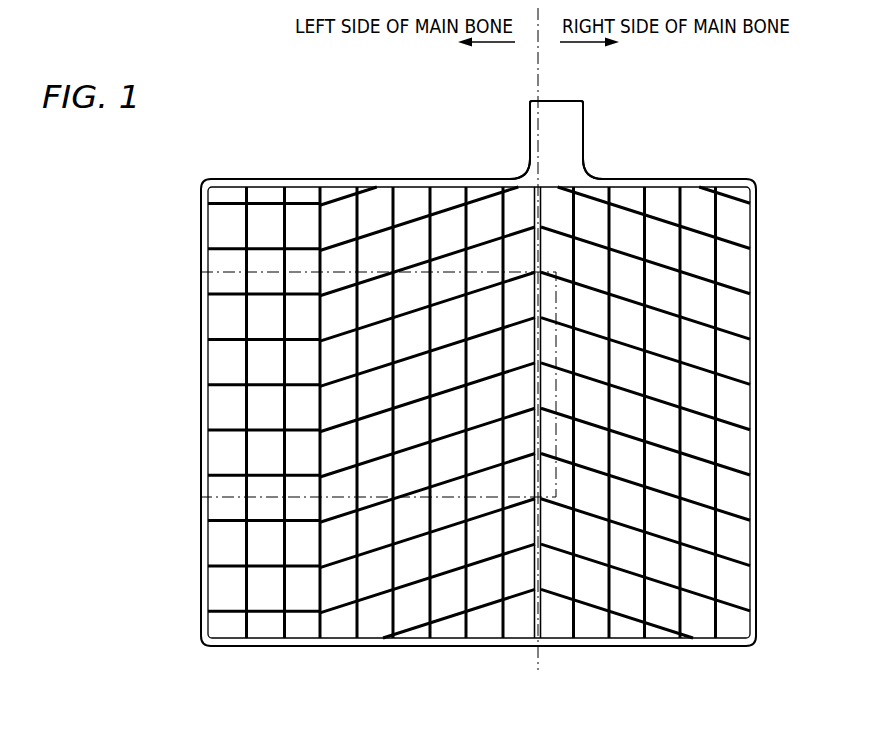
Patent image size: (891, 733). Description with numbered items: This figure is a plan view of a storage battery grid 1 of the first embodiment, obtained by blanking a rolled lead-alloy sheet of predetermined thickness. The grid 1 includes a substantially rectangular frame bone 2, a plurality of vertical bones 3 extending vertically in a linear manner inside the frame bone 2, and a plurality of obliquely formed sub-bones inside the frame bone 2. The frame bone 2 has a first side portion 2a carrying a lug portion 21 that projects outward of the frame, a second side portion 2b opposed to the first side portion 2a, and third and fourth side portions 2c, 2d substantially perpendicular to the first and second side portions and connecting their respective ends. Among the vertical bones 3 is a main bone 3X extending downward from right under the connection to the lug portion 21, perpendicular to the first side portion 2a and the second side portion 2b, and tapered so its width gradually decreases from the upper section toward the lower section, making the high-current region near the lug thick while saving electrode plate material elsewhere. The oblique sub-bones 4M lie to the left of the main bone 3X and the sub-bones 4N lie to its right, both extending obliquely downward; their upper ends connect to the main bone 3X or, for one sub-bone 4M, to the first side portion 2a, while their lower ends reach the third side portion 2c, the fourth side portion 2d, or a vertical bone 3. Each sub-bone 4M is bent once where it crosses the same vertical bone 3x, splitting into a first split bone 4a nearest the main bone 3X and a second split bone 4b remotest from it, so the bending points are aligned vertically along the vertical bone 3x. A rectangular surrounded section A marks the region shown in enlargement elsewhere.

The grid 1 is at (846, 97).
The frame bone 2 is at (752, 176).
The first side portion 2a is at (376, 178).
The second side portion 2b is at (495, 647).
The third side portion 2c is at (200, 351).
The fourth side portion 2d is at (758, 338).
The lug portion 21 is at (553, 100).
The vertical bone 3 is at (613, 236).
The vertical bone 3x is at (327, 264).
The main bone 3X is at (545, 530).
The sub-bone 4M is at (228, 247).
The sub-bone 4N is at (732, 284).
The first split bone 4a is at (407, 264).
The second split bone 4b is at (265, 292).
The surrounded section A is at (223, 272).